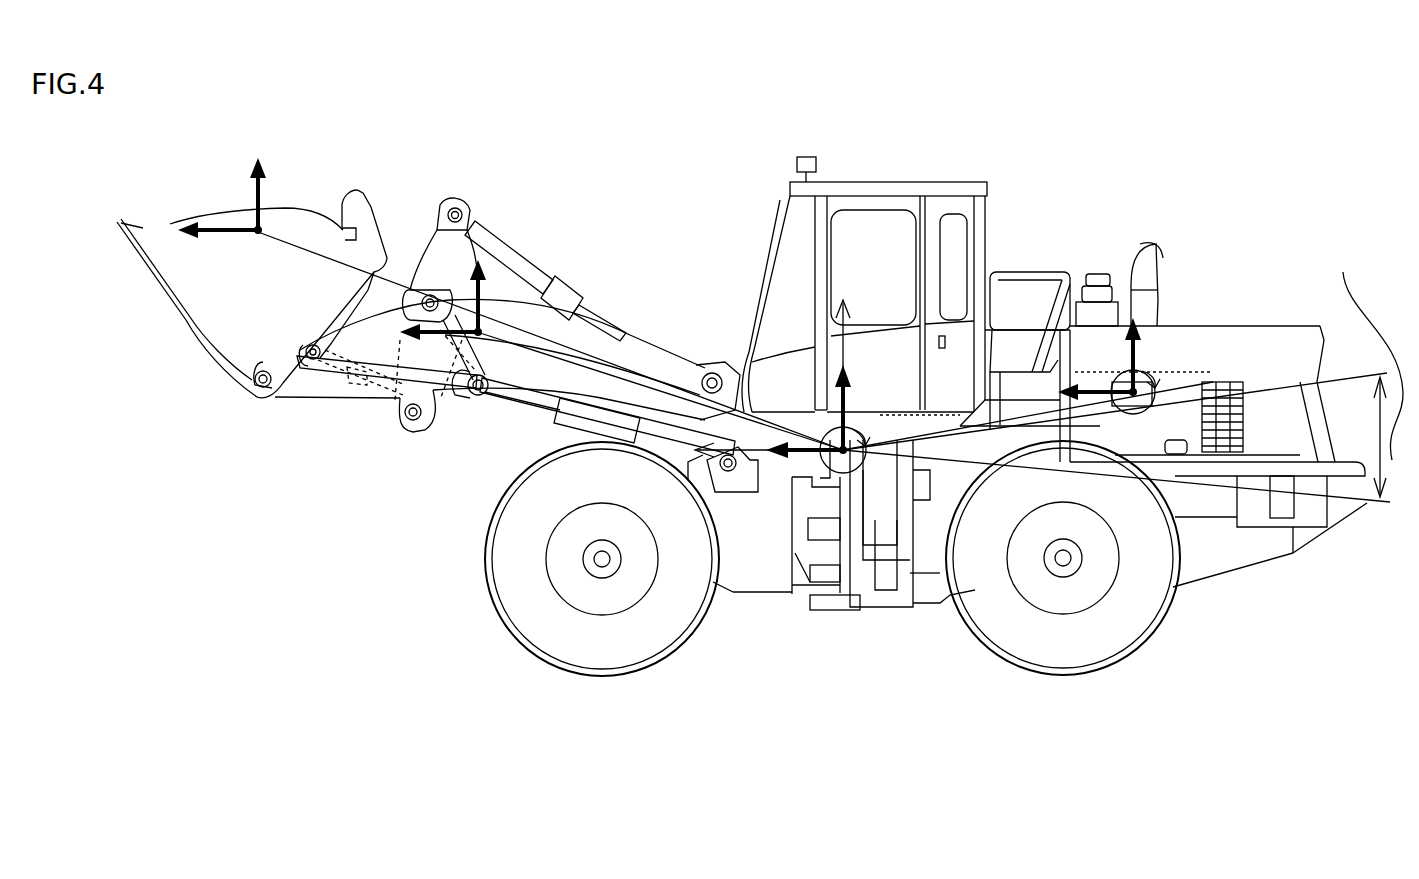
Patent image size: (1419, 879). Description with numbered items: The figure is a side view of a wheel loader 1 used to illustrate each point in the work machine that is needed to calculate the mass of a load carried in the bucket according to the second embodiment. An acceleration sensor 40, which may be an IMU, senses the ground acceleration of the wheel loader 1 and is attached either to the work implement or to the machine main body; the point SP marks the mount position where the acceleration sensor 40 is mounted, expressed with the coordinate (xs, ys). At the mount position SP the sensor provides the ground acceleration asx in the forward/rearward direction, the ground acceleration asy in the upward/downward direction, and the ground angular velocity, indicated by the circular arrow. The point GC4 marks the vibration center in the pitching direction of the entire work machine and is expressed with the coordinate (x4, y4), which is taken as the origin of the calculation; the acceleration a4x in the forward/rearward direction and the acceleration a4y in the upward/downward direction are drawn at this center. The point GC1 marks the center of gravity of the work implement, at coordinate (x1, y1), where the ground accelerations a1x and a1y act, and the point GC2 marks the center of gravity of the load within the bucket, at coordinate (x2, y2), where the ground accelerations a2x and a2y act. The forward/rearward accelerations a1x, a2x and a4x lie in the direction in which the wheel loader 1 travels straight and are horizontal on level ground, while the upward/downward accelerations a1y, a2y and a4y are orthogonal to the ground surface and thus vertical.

The wheel loader 1 is at (1106, 168).
The acceleration sensor 40 is at (1160, 378).
The center of gravity of work implement GC1 is at (478, 340).
The center of gravity of load within bucket GC2 is at (258, 236).
The pitching vibration center GC4 is at (848, 453).
The mount position SP is at (1137, 392).
The ground acceleration in forward/rearward direction at GC1 a1x is at (422, 335).
The ground acceleration in upward/downward direction at GC1 a1y is at (476, 284).
The ground acceleration in forward/rearward direction at GC2 a2x is at (202, 233).
The ground acceleration in upward/downward direction at GC2 a2y is at (254, 182).
The acceleration in forward/rearward direction at GC4 a4x is at (778, 455).
The acceleration in upward/downward direction at GC4 a4y is at (857, 407).
The ground acceleration in forward/rearward direction at SP asx is at (1077, 394).
The ground acceleration in upward/downward direction at SP asy is at (1130, 341).